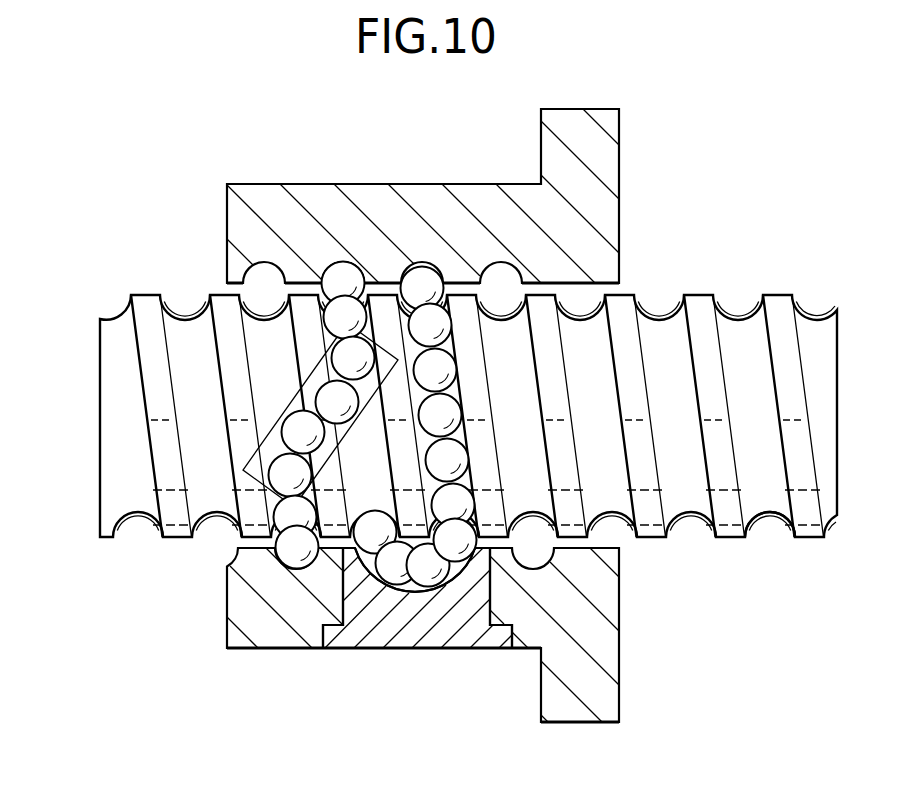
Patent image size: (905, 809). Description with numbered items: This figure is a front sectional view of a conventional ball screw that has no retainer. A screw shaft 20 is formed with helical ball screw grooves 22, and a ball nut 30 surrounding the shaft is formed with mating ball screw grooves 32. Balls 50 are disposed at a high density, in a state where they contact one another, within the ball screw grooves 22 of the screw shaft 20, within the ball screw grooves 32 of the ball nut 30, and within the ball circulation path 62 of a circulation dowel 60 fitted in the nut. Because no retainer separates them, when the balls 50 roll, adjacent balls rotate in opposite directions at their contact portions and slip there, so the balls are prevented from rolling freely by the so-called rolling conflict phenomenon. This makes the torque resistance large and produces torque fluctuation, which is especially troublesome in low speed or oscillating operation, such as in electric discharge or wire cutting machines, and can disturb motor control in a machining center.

The screw shaft 20 is at (817, 337).
The ball screw grooves 22 is at (768, 517).
The ball nut 30 is at (478, 197).
The ball screw grooves 32 is at (351, 282).
The balls 50 is at (437, 578).
The circulation dowel 60 is at (280, 423).
The ball circulation path 62 is at (377, 567).